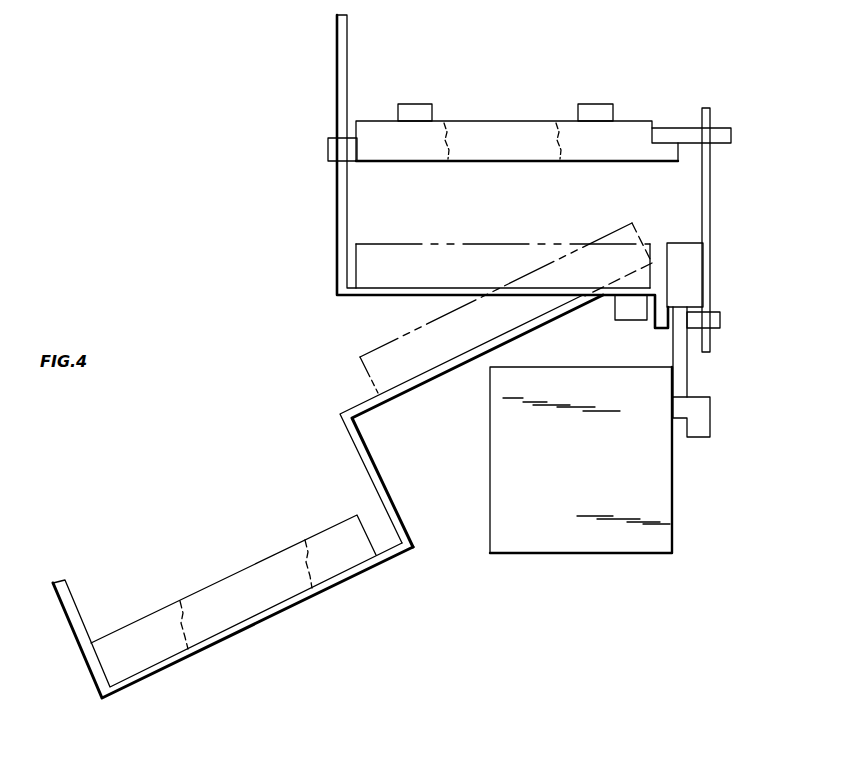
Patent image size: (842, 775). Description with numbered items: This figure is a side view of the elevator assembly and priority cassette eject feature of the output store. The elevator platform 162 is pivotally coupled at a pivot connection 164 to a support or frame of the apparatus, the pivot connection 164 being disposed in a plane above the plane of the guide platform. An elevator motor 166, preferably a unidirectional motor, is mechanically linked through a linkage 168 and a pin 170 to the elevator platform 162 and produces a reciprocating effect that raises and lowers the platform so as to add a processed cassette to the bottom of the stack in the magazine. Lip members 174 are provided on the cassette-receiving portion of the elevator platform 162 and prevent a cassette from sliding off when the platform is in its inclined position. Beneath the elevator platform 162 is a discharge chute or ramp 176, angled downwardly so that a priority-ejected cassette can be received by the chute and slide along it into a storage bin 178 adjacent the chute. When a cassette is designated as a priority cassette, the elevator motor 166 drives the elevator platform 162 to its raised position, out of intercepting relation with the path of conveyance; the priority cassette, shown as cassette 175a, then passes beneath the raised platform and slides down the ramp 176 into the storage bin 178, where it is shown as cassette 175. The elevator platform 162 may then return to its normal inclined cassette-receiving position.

The elevator platform 162 is at (470, 162).
The pivot connection 164 is at (328, 162).
The elevator motor 166 is at (588, 557).
The linkage 168 is at (712, 233).
The pin 170 is at (678, 128).
The lip members 174 is at (424, 104).
The cassette 175 is at (175, 570).
The cassette 175a is at (367, 376).
The discharge chute or ramp 176 is at (403, 393).
The storage bin 178 is at (311, 527).